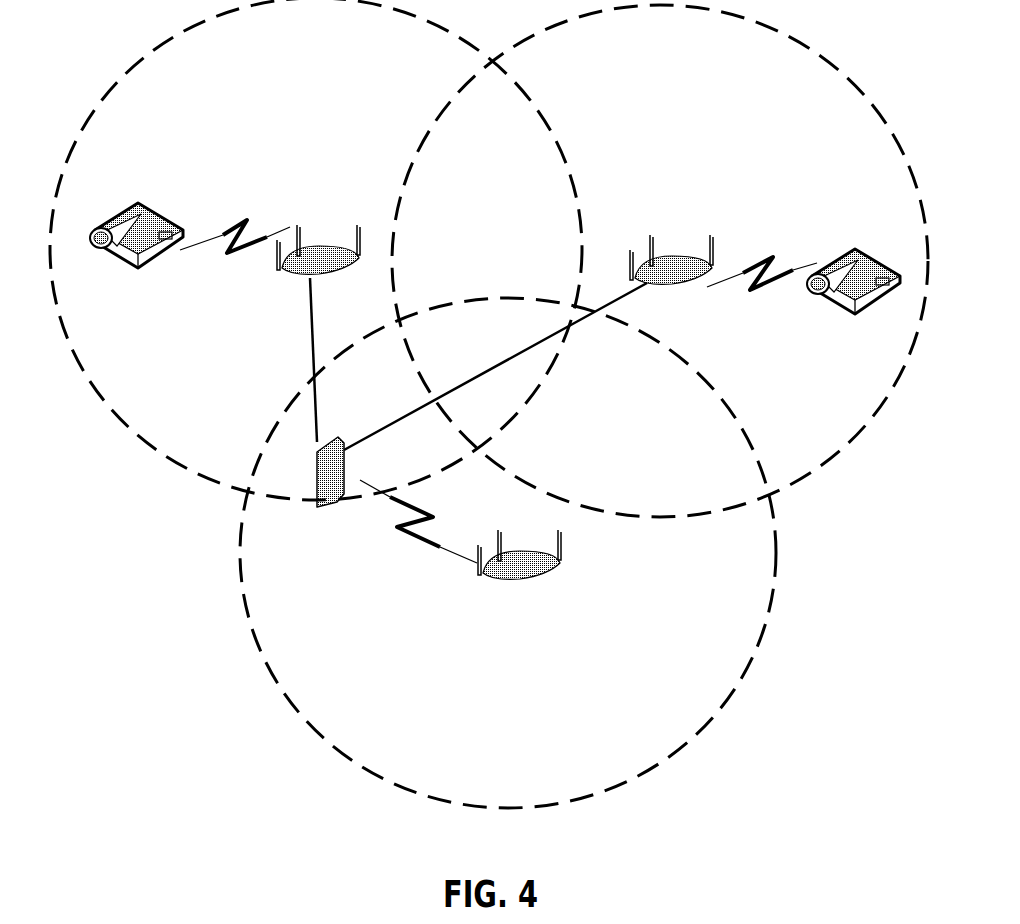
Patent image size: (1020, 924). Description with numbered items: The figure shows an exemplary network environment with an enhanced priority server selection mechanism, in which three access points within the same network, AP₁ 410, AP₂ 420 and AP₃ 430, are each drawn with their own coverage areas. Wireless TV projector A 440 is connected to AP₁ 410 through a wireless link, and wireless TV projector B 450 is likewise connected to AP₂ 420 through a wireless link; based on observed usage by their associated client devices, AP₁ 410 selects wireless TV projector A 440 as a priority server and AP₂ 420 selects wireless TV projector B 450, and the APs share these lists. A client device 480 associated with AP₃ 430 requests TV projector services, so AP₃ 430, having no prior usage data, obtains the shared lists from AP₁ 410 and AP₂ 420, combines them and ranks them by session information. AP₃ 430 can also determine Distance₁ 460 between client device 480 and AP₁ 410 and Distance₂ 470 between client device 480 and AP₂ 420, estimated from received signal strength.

The AP₁ 410 is at (341, 315).
The AP₂ 420 is at (695, 321).
The AP₃ 430 is at (541, 618).
The wireless TV projector A 440 is at (173, 343).
The wireless TV projector B 450 is at (836, 384).
The Distance₁ 460 is at (271, 398).
The Distance₂ 470 is at (481, 371).
The client device 480 is at (366, 543).